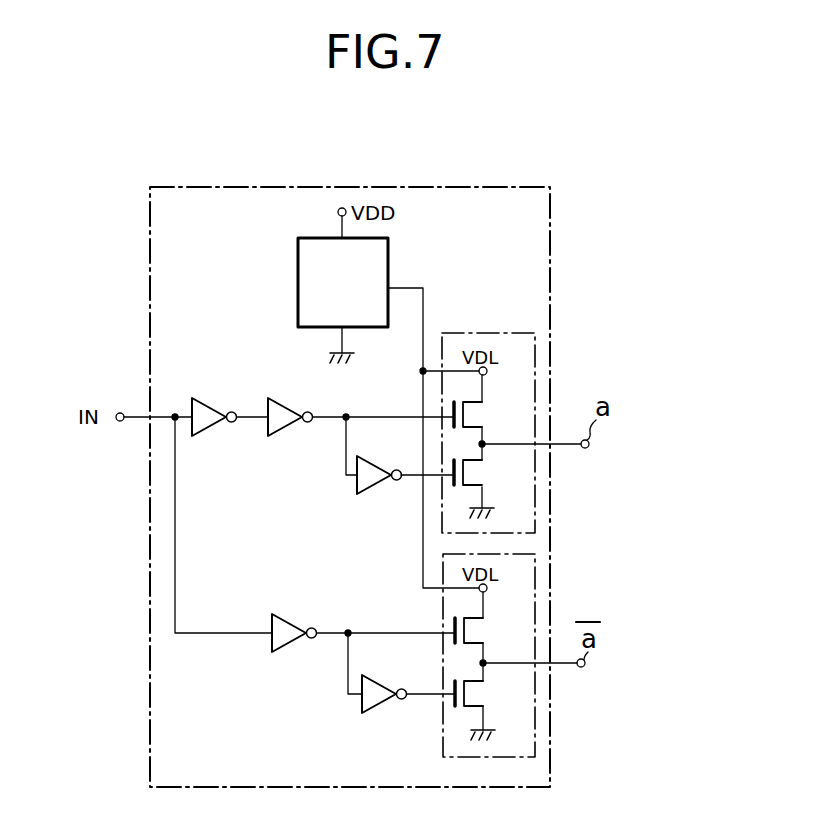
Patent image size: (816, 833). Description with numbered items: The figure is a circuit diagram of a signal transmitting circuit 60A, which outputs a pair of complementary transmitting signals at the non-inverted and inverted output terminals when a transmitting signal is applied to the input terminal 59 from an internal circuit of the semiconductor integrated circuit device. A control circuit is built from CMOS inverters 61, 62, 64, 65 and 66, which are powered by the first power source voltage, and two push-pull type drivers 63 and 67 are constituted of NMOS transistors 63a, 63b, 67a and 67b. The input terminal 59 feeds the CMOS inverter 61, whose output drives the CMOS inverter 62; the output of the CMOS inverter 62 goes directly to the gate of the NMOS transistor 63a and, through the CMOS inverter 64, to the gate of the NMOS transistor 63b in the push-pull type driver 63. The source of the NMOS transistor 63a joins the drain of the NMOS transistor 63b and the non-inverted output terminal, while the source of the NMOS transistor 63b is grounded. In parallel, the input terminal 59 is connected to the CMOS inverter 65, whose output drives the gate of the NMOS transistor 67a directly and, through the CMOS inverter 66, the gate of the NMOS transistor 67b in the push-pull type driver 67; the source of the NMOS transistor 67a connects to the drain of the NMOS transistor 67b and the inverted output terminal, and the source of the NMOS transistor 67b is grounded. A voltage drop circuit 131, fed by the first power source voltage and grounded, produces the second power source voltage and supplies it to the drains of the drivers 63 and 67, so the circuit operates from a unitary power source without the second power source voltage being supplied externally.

The transmitting circuit 60A is at (443, 184).
The voltage drop circuit 131 is at (388, 262).
The input terminal 59 is at (120, 412).
The CMOS inverter 61 is at (212, 400).
The CMOS inverter 62 is at (284, 400).
The push-pull type driver 63 is at (446, 333).
The NMOS transistor 63a is at (470, 416).
The NMOS transistor 63b is at (470, 476).
The CMOS inverter 64 is at (366, 490).
The CMOS inverter 65 is at (294, 616).
The CMOS inverter 66 is at (368, 712).
The push-pull type driver 67 is at (443, 745).
The NMOS transistor 67a is at (470, 634).
The NMOS transistor 67b is at (470, 697).